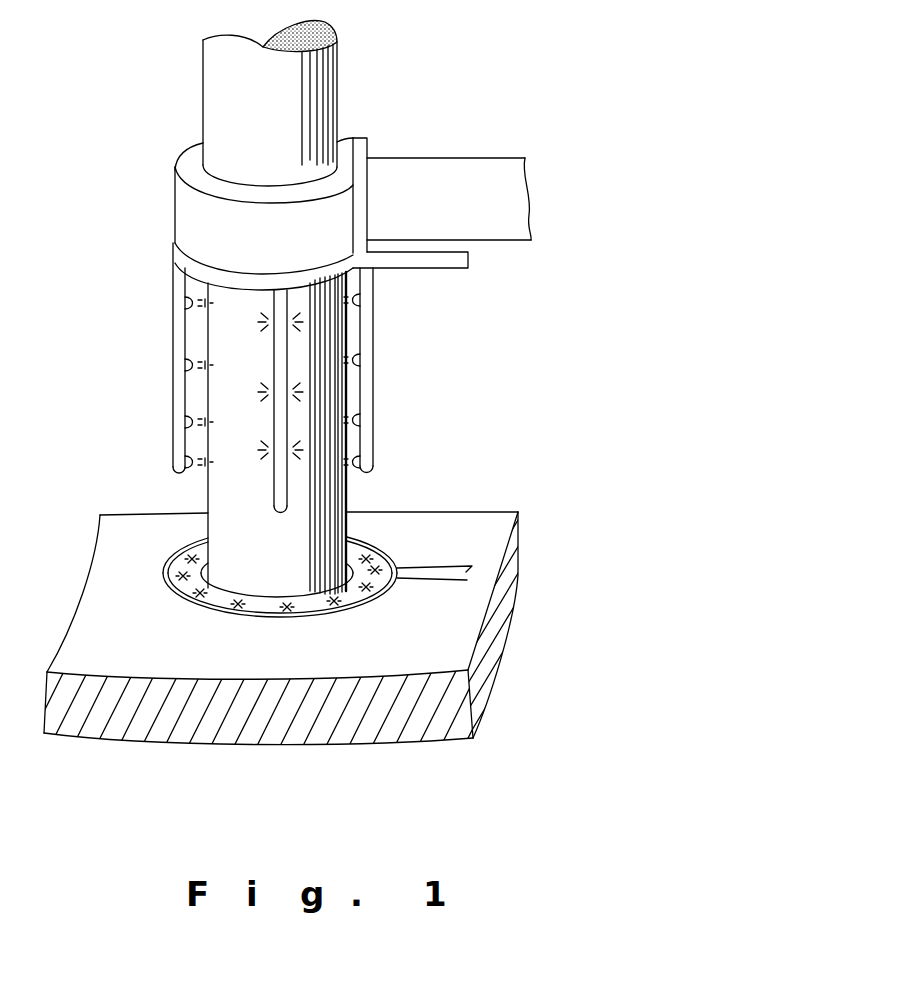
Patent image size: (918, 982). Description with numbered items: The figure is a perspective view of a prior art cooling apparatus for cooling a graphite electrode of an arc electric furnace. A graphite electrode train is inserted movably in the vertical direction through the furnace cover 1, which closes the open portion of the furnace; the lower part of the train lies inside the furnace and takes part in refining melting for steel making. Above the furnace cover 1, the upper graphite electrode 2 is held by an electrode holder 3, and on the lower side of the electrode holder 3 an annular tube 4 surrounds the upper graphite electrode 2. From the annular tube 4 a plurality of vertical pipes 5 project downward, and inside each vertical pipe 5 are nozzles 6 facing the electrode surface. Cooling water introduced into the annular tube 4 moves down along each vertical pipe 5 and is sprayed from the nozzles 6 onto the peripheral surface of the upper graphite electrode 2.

The furnace cover 1 is at (473, 522).
The upper graphite electrode 2 is at (293, 120).
The electrode holder 3 is at (337, 222).
The annular tube 4 is at (185, 268).
The vertical pipes 5 is at (173, 335).
The nozzles 6 is at (192, 372).